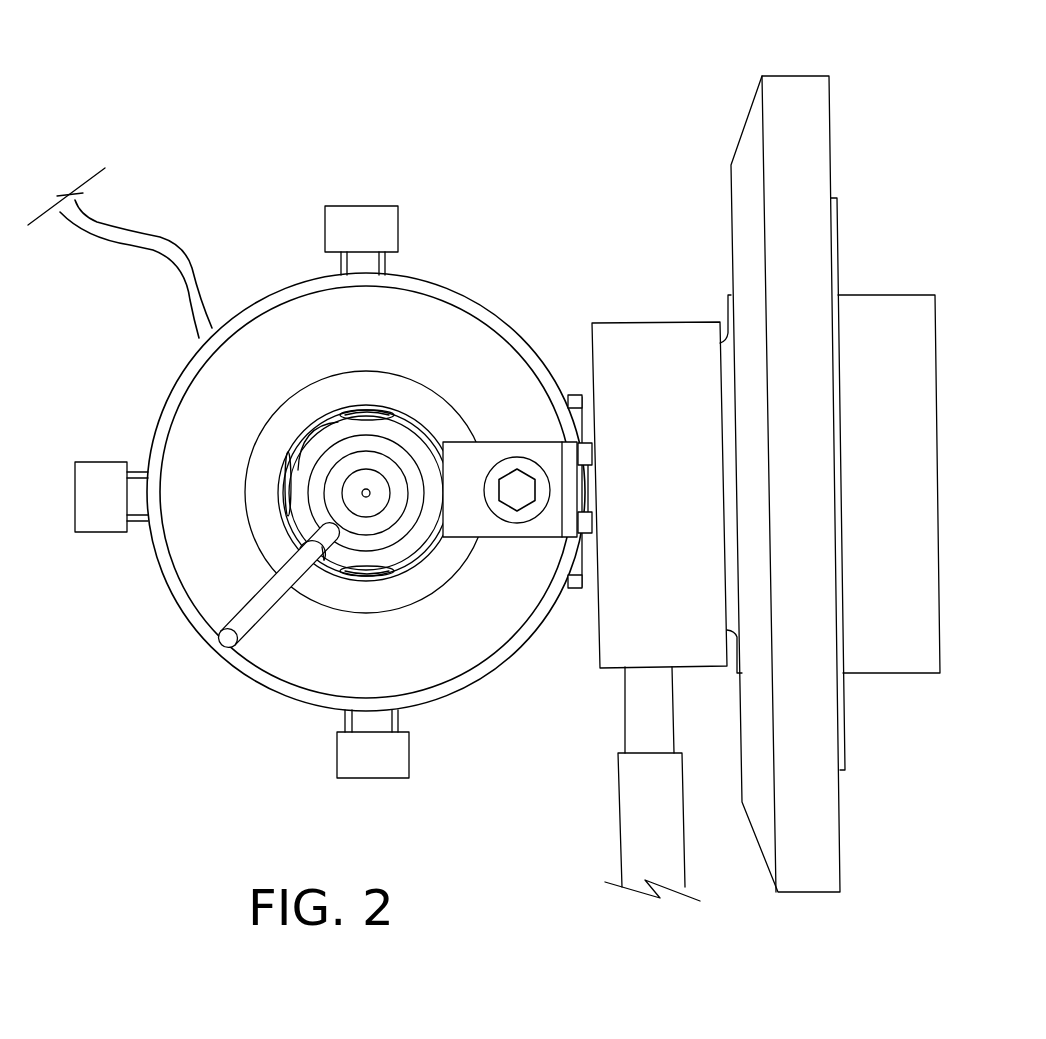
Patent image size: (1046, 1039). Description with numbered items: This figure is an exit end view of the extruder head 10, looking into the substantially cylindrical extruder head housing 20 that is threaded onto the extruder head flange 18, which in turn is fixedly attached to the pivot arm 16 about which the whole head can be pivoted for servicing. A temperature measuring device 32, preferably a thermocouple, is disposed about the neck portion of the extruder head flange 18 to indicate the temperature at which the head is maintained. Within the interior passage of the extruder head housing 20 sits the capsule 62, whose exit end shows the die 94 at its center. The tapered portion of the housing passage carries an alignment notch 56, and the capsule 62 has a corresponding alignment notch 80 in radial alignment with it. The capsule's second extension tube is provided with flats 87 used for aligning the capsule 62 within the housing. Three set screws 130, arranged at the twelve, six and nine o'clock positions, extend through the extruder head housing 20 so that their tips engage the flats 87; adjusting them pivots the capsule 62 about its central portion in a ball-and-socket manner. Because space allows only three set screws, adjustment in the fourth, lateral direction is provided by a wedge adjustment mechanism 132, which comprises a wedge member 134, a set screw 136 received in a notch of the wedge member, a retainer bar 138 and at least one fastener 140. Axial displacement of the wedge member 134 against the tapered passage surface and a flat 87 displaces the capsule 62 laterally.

The extruder head 10 is at (541, 164).
The pivot arm 16 is at (887, 690).
The extruder head flange 18 is at (822, 132).
The extruder head housing 20 is at (285, 667).
The temperature measuring device 32 is at (648, 336).
The alignment notch 56 is at (263, 608).
The capsule 62 is at (407, 428).
The alignment notch 80 is at (326, 563).
The flats 87 is at (310, 442).
The die 94 is at (345, 493).
The set screws 130 is at (364, 212).
The wedge adjustment mechanism 132 is at (502, 563).
The wedge member 134 is at (488, 452).
The set screw 136 is at (498, 505).
The retainer bar 138 is at (568, 530).
The fastener 140 is at (590, 456).